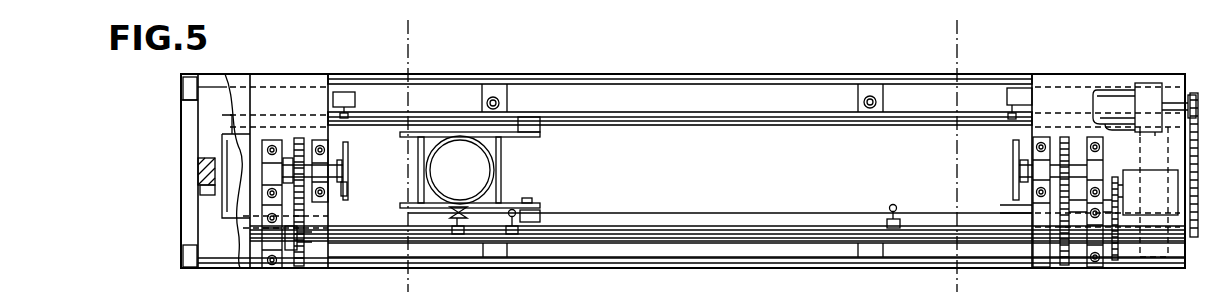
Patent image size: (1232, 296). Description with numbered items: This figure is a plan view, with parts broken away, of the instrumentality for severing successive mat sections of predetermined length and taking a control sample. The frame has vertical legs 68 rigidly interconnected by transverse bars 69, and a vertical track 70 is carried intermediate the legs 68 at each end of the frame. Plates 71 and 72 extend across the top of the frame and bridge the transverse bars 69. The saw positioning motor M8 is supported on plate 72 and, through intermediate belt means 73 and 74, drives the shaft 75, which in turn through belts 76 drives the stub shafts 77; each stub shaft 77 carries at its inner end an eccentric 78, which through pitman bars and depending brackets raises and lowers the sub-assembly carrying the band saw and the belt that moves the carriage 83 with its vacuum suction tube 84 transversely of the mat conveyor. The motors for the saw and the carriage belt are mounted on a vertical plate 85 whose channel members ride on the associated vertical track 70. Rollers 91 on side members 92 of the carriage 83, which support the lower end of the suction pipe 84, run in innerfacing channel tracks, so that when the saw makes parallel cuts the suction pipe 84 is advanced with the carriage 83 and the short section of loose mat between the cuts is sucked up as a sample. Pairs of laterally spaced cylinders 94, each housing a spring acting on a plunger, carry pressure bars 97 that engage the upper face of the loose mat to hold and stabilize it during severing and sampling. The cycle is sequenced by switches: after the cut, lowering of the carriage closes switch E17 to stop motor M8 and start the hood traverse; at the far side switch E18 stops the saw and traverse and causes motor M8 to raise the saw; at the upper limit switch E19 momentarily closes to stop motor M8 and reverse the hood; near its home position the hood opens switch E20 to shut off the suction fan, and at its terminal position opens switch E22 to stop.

The vertical legs 68 is at (181, 265).
The transverse bars 69 is at (765, 80).
The vertical track 70 is at (198, 177).
The plate 71 is at (288, 82).
The plate 72 is at (1057, 80).
The belt means 73 is at (1196, 177).
The belt means 74 is at (1120, 220).
The shaft 75 is at (690, 238).
The belts 76 is at (293, 232).
The stub shafts 77 is at (306, 140).
The eccentric 78 is at (348, 148).
The carriage 83 is at (500, 182).
The vacuum suction tube 84 is at (446, 153).
The vertical plate 85 is at (222, 135).
The rollers 91 is at (540, 214).
The side members 92 is at (500, 152).
The cylinders 94 is at (497, 97).
The pressure bar 97 is at (693, 95).
The switch E17 is at (1013, 88).
The switch E18 is at (900, 222).
The switch E19 is at (345, 92).
The switch E20 is at (512, 234).
The switch E22 is at (455, 234).
The saw positioning motor M8 is at (1150, 92).